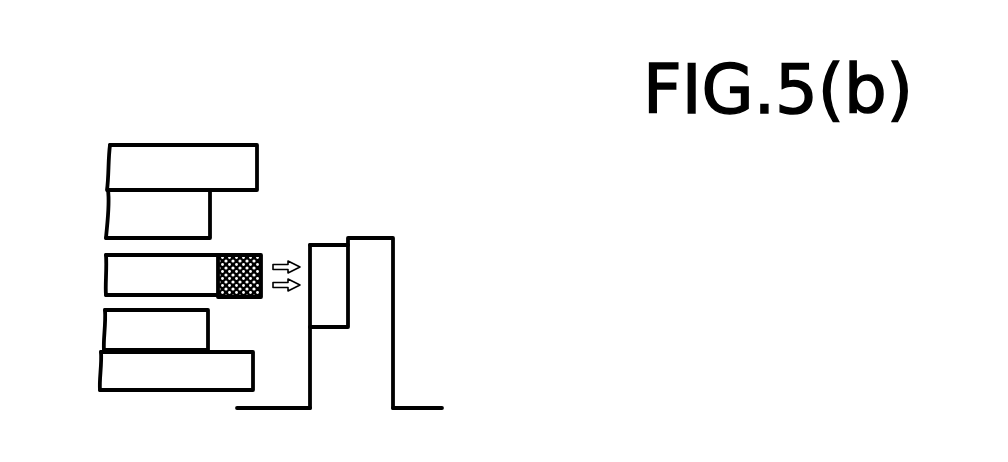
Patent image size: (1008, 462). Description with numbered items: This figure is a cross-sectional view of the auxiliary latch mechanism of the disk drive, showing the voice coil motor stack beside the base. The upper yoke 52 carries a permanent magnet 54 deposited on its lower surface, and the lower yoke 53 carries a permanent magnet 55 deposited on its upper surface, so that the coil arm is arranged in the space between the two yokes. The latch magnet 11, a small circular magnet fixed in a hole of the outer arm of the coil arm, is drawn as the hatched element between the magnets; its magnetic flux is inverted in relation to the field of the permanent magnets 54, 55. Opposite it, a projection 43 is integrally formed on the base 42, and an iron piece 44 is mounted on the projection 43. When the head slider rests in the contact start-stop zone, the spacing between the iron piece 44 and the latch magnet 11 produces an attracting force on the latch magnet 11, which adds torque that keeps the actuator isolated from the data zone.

The latch magnet 11 is at (245, 255).
The base 42 is at (413, 408).
The projection 43 is at (395, 300).
The iron piece 44 is at (333, 253).
The upper yoke 52 is at (258, 158).
The lower yoke 53 is at (254, 357).
The permanent magnet 54 is at (212, 226).
The permanent magnet 55 is at (209, 322).